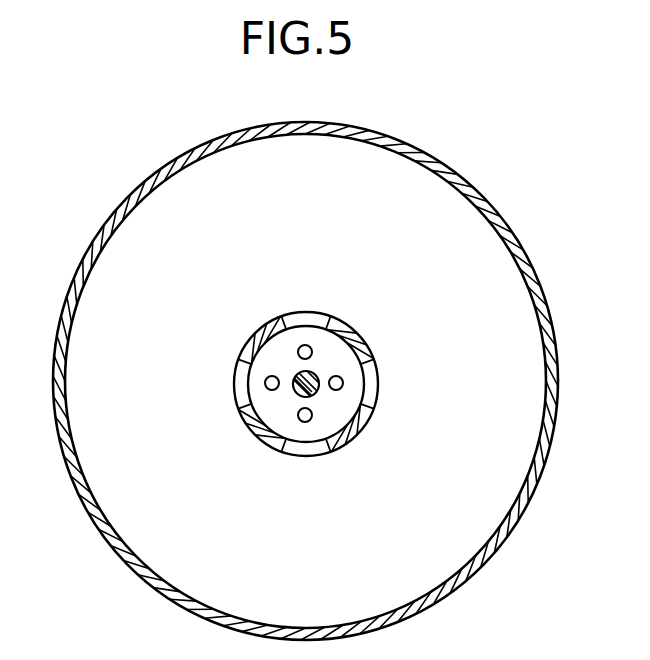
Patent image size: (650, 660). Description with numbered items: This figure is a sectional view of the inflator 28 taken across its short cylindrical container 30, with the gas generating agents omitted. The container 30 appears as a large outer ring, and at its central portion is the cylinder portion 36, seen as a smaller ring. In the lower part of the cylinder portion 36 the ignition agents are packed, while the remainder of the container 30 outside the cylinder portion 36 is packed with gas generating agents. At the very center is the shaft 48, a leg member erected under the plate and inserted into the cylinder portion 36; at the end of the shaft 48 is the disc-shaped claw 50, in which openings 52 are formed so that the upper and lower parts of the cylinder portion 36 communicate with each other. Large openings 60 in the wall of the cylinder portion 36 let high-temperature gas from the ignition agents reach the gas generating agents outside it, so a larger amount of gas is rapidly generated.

The inflator 28 is at (333, 381).
The container 30 is at (548, 330).
The cylinder portion 36 is at (316, 385).
The shaft 48 is at (316, 392).
The claw 50 is at (268, 357).
The openings 52 is at (313, 352).
The large openings 60 is at (312, 325).